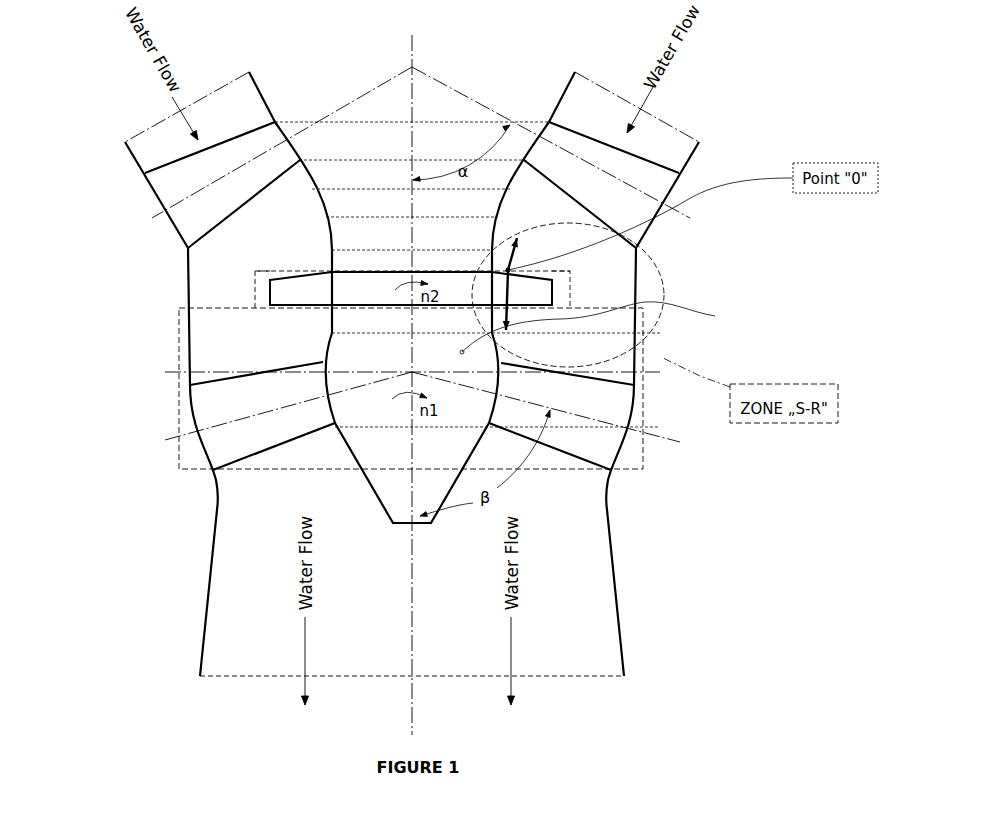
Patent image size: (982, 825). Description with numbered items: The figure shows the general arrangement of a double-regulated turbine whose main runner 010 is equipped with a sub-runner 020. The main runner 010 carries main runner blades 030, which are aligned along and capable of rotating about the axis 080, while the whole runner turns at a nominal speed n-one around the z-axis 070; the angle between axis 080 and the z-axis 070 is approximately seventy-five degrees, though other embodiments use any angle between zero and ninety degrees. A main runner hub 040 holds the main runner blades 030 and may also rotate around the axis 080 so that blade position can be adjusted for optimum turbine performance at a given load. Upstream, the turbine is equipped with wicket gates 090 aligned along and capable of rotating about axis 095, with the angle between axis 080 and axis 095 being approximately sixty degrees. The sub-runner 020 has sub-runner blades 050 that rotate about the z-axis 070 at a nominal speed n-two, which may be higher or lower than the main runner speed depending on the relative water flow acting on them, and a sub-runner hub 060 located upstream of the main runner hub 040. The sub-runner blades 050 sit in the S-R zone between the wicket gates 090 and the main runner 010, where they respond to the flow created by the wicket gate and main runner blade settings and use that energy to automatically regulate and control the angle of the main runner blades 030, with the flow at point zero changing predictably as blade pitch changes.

The main runner 010 is at (182, 401).
The sub-runner 020 is at (255, 281).
The main runner blades 030 is at (607, 402).
The main runner hub 040 is at (655, 357).
The sub-runner blades 050 is at (610, 328).
The sub-runner hub 060 is at (543, 295).
The z-axis 070 is at (417, 441).
The axis 080 is at (600, 427).
The wicket gates 090 is at (640, 240).
The axis 095 is at (640, 190).